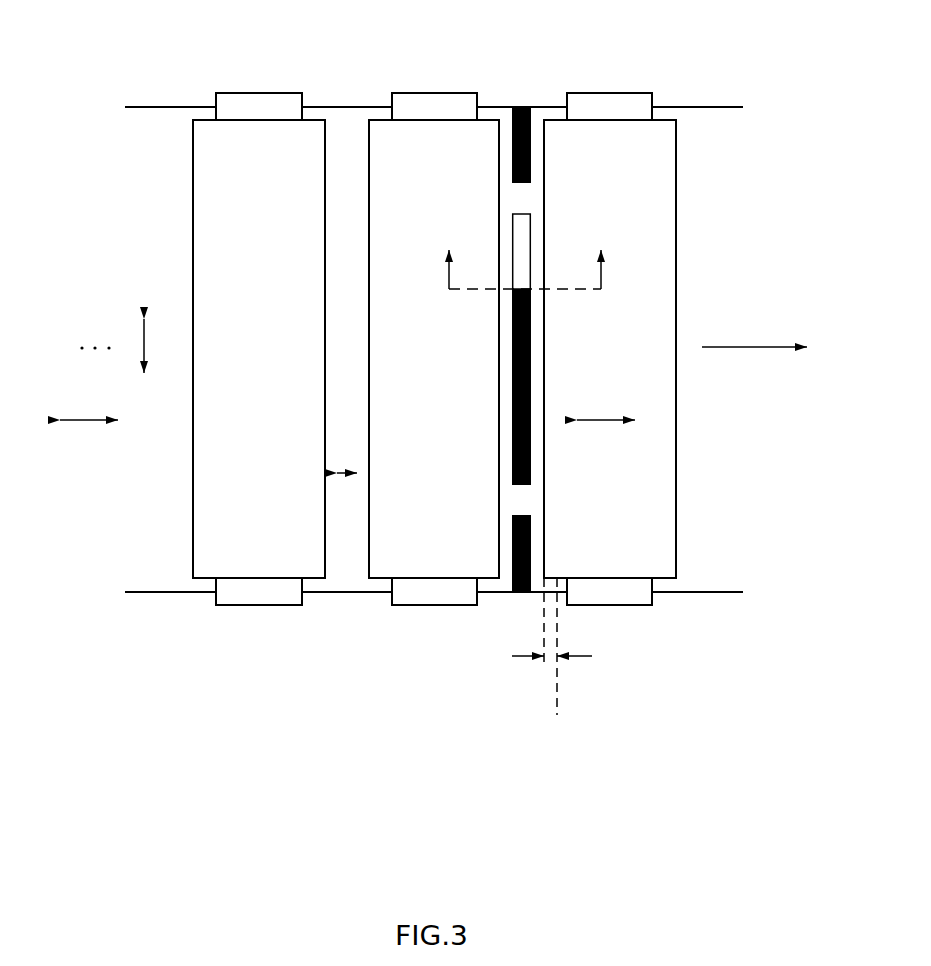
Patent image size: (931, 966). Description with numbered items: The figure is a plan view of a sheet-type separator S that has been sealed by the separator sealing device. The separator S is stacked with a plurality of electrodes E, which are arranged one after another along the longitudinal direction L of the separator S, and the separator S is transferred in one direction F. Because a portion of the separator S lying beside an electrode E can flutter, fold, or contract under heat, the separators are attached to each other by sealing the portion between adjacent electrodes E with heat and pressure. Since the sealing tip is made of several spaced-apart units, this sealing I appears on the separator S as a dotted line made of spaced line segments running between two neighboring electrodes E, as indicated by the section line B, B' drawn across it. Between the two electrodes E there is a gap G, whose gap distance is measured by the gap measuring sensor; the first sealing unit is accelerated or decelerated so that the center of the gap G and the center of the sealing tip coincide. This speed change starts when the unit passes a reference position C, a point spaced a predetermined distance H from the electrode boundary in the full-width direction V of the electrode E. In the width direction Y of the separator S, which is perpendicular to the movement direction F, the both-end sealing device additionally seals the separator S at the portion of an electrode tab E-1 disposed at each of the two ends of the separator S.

The separator S is at (348, 137).
The electrode tab E-1 is at (438, 103).
The electrode E is at (588, 135).
The sealing I is at (520, 105).
The section line B is at (522, 254).
The section line B' is at (602, 254).
The transfer direction F is at (762, 348).
The width direction Y is at (156, 346).
The longitudinal direction L is at (89, 437).
The gap G is at (347, 491).
The full-width direction V is at (606, 437).
The predetermined distance H is at (551, 622).
The reference position C is at (556, 662).